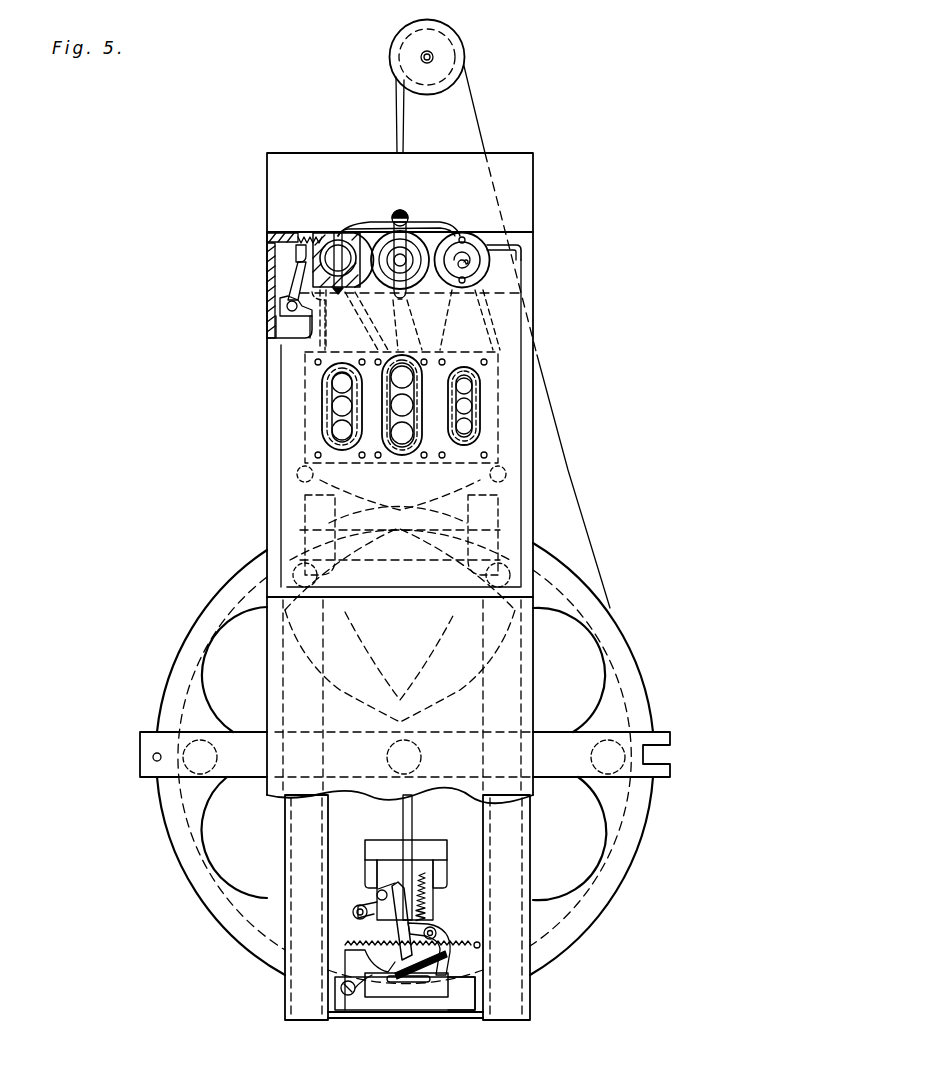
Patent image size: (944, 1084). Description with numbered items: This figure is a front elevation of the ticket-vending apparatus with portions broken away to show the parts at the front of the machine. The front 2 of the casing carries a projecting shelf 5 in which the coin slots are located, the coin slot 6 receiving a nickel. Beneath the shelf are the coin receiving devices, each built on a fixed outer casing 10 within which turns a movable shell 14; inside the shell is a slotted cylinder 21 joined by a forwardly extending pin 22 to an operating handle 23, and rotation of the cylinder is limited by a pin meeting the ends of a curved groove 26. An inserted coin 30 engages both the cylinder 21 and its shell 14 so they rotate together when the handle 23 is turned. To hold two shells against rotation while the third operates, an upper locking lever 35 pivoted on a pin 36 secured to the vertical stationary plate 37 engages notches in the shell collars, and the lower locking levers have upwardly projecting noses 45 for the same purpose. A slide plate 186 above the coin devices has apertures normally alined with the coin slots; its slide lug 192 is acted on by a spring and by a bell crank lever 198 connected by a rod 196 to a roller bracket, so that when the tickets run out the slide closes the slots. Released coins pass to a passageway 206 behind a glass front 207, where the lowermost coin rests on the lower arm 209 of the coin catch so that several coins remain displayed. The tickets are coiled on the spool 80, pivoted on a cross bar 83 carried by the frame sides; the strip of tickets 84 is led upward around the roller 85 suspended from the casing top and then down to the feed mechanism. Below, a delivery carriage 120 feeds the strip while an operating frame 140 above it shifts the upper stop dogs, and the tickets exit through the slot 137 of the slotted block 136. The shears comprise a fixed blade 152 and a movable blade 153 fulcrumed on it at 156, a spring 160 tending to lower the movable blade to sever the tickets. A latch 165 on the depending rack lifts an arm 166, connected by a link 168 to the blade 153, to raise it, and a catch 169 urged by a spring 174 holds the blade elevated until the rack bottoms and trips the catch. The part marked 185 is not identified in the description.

The front 2 is at (418, 641).
The projecting shelf 5 is at (272, 234).
The coin slot 6 is at (333, 238).
The outer casing 10 is at (300, 264).
The movable shell 14 is at (300, 278).
The slotted cylinder 21 is at (298, 300).
The forwardly extending pin 22 is at (478, 268).
The operating handle 23 is at (408, 244).
The curved groove 26 is at (487, 253).
The coin 30 is at (470, 385).
The upper locking lever 35 is at (365, 224).
The pin 36 is at (404, 212).
The vertical stationary plate 37 is at (318, 165).
The upwardly projecting noses 45 is at (500, 291).
The spool 80 is at (632, 666).
The cross bar 83 is at (648, 738).
The strip of tickets 84 is at (562, 443).
The roller 85 is at (445, 58).
The delivery carriage 120 is at (448, 893).
The slotted block 136 is at (420, 990).
The slot 137 is at (410, 982).
The operating frame 140 is at (432, 857).
The fixed blade 152 is at (460, 990).
The movable blade 153 is at (388, 966).
The fulcrum 156 is at (320, 1018).
The spring 160 is at (390, 962).
The latch 165 is at (380, 958).
The arm 166 is at (367, 925).
The link 168 is at (375, 910).
The catch 169 is at (450, 960).
The spring 174 is at (455, 921).
The rod 185 is at (447, 840).
The slide plate 186 is at (310, 237).
The slide lug 192 is at (281, 252).
The rod 196 is at (305, 336).
The bell crank lever 198 is at (305, 318).
The passageway 206 is at (490, 357).
The glass front 207 is at (335, 378).
The lower arm 209 is at (470, 312).